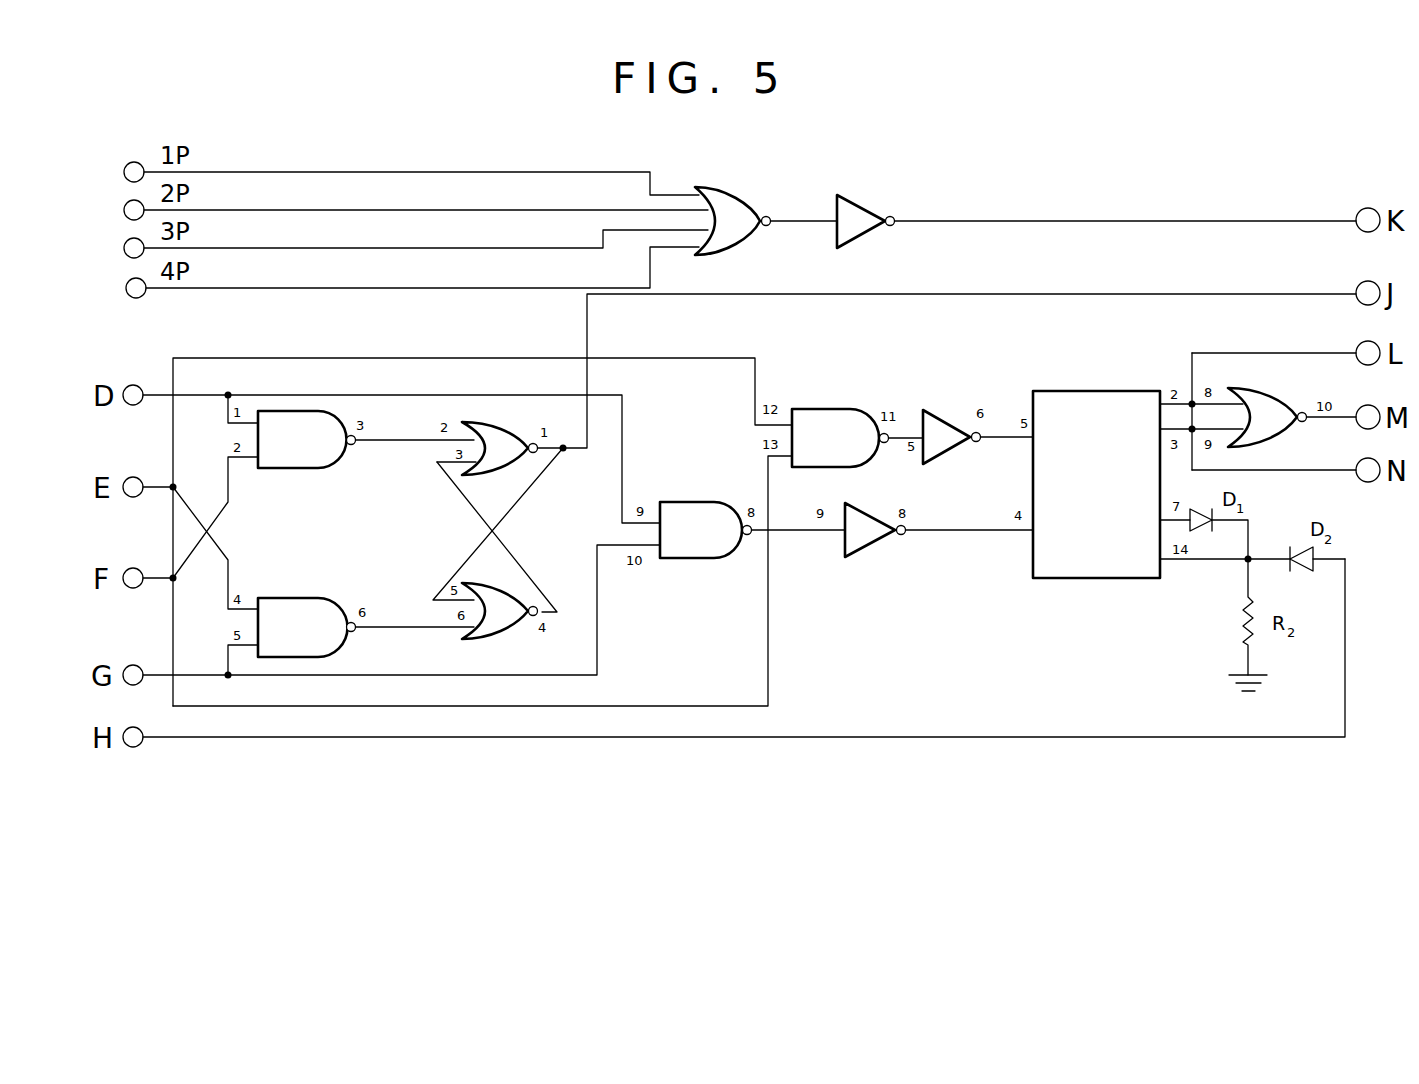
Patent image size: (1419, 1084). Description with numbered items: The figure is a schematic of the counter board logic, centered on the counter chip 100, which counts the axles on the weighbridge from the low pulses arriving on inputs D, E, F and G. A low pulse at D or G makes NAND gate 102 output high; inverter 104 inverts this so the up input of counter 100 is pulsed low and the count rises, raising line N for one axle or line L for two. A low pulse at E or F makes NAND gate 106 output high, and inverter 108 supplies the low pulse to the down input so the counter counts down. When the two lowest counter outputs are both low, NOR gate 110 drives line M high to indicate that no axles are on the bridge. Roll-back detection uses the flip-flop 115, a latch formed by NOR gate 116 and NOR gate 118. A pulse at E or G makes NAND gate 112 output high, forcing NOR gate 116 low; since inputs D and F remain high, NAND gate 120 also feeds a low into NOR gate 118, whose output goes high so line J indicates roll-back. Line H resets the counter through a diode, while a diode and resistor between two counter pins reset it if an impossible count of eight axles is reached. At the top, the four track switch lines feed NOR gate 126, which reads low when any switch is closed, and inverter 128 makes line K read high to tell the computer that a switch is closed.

The counter chip 100 is at (1082, 580).
The NAND gate 102 is at (670, 502).
The inverter 104 is at (862, 557).
The NAND gate 106 is at (835, 409).
The inverter 108 is at (937, 410).
The NOR gate 110 is at (1272, 393).
The NAND gate 112 is at (293, 598).
The flip-flop 115 is at (500, 504).
The NOR gate 116 is at (498, 641).
The NOR gate 118 is at (498, 425).
The NAND gate 120 is at (300, 470).
The NOR gate 126 is at (735, 188).
The inverter 128 is at (860, 200).